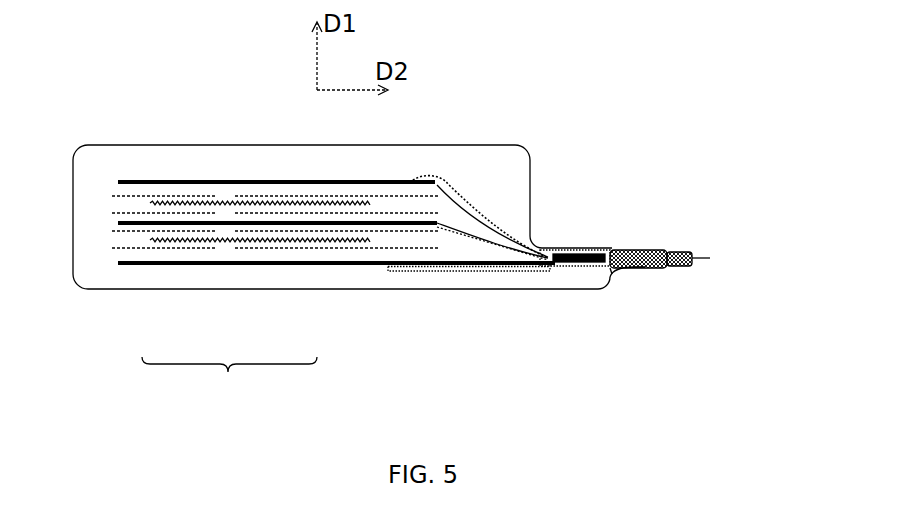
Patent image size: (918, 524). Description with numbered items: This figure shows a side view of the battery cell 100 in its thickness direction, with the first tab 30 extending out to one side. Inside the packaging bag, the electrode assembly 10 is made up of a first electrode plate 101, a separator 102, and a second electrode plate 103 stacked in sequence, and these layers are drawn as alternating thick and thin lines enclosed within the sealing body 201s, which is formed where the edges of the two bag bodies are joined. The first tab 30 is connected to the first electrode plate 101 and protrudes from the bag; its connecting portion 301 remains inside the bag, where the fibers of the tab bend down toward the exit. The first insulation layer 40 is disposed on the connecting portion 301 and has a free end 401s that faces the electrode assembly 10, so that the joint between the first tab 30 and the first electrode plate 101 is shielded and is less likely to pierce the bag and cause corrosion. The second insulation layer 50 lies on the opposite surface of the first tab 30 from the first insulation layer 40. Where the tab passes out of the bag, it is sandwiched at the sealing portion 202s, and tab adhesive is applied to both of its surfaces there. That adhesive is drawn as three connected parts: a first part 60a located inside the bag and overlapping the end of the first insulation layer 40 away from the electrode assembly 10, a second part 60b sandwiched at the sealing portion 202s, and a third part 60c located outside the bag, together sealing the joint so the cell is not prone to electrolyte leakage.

The battery cell 100 is at (180, 63).
The electrode assembly 10 is at (229, 382).
The first electrode plate 101 is at (328, 263).
The separator 102 is at (243, 248).
The second electrode plate 103 is at (217, 240).
The sealing body 201s is at (425, 290).
The sealing portion 202s is at (638, 270).
The connecting portion 301 is at (487, 232).
The free end 401s is at (450, 183).
The first insulation layer 40 is at (560, 250).
The second insulation layer 50 is at (550, 268).
The first part 60a is at (617, 267).
The second part 60b is at (650, 252).
The third part 60c is at (687, 248).
The first tab 30 is at (710, 258).